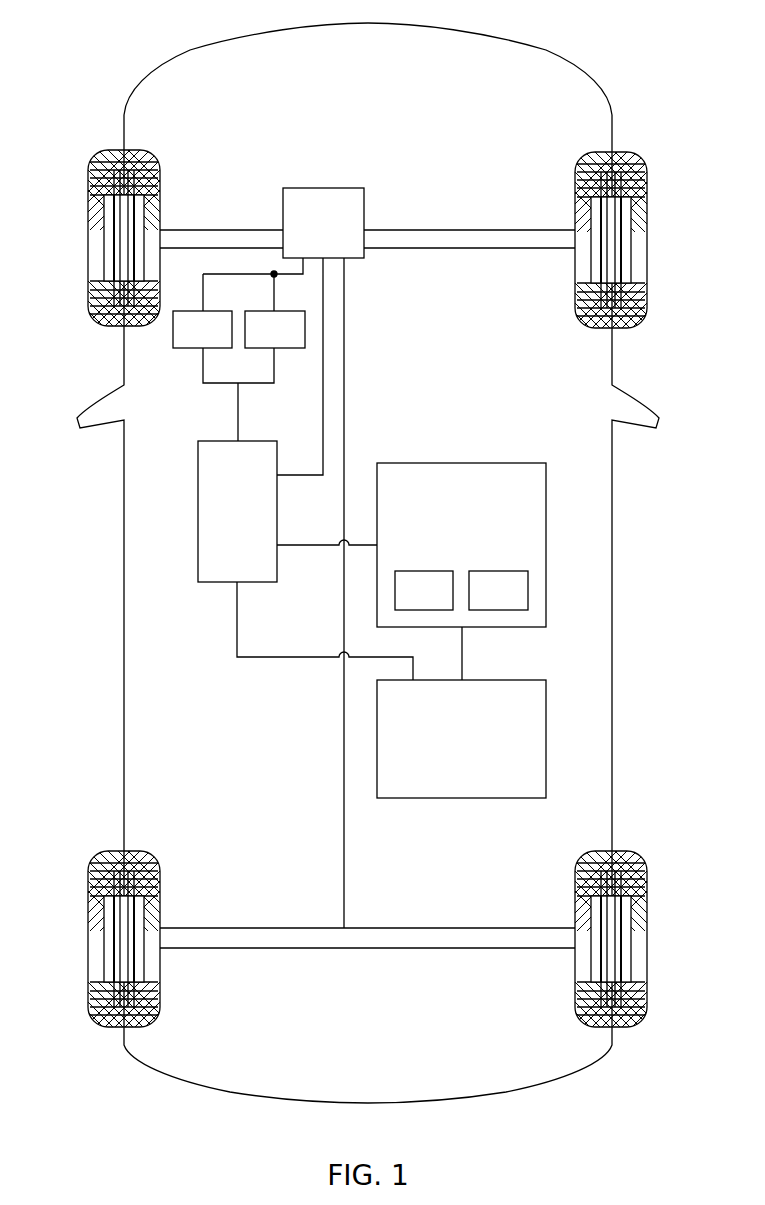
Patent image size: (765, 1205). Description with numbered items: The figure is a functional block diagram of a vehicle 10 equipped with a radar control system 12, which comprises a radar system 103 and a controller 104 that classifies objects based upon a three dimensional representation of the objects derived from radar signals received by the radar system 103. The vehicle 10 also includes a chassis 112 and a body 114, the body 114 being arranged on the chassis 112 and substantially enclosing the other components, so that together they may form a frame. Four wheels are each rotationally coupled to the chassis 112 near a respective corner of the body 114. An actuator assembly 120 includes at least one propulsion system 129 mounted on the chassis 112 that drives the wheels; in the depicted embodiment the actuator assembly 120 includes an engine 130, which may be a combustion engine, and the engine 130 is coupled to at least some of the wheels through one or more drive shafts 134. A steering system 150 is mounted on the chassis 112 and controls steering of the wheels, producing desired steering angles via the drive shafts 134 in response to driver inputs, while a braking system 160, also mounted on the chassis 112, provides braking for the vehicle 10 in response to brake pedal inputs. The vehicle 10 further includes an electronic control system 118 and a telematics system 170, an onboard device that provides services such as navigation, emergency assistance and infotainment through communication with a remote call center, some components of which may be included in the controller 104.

The vehicle 10 is at (350, 559).
The radar control system 12 is at (461, 529).
The radar system 103 is at (407, 601).
The controller 104 is at (481, 601).
The chassis 112 is at (342, 763).
The body 114 is at (123, 575).
The electronic control system 118 is at (198, 512).
The actuator assembly 120 is at (355, 264).
The propulsion system 129 is at (323, 187).
The engine 130 is at (323, 197).
The drive shafts 134 is at (207, 229).
The steering system 150 is at (186, 340).
The braking system 160 is at (258, 340).
The telematics system 170 is at (462, 798).